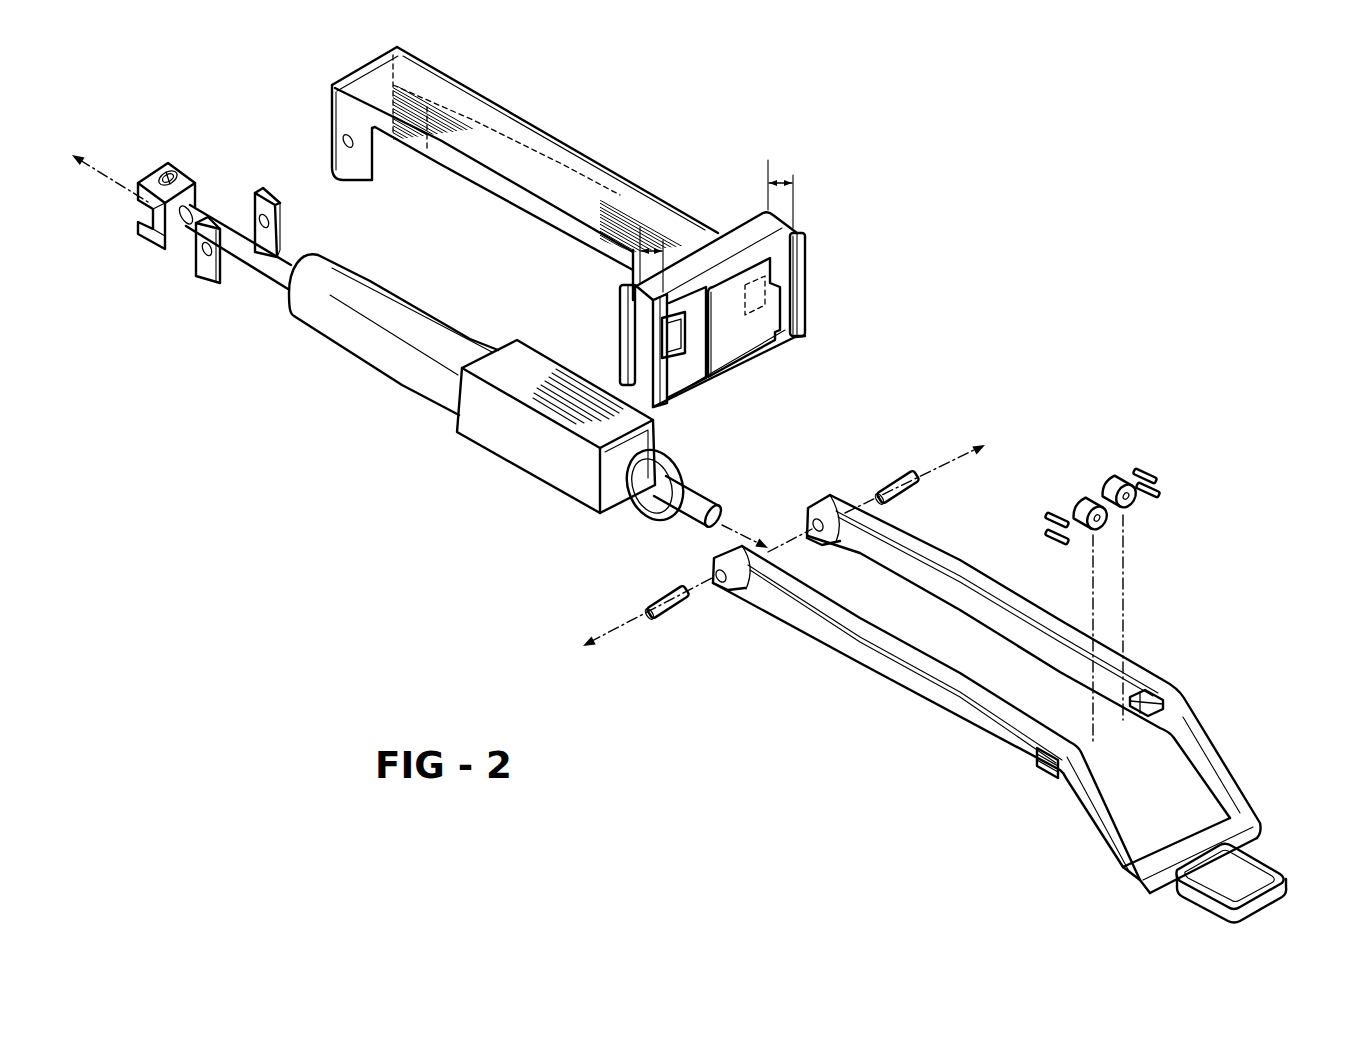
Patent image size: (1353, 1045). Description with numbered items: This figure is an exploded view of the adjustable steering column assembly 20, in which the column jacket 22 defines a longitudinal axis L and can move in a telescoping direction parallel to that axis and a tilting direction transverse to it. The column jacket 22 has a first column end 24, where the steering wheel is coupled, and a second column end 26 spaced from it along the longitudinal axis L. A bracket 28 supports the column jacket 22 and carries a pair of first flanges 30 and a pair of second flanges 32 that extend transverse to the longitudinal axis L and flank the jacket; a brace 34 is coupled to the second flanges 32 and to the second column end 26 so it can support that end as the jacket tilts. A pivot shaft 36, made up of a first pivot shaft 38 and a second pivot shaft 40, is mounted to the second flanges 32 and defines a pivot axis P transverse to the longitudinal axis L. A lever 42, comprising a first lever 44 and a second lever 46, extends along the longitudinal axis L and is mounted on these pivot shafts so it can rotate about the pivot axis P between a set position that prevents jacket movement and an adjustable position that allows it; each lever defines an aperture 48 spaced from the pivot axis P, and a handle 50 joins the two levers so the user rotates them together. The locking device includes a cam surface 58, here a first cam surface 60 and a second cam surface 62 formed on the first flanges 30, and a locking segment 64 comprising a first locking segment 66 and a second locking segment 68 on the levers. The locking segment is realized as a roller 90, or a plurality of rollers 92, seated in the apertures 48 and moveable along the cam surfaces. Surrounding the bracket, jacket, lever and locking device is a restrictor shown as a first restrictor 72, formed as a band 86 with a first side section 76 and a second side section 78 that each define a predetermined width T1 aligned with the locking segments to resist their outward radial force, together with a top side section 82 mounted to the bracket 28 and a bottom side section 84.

The adjustable steering column assembly 20 is at (1022, 200).
The column jacket 22 is at (531, 460).
The first column end 24 is at (698, 500).
The second column end 26 is at (272, 268).
The bracket 28 is at (610, 210).
The first flanges 30 is at (752, 350).
The second flanges 32 is at (340, 113).
The brace 34 is at (197, 265).
The pivot shaft 36 is at (706, 620).
The first pivot shaft 38 is at (660, 600).
The second pivot shaft 40 is at (890, 485).
The lever 42 is at (939, 760).
The first lever 44 is at (900, 680).
The second lever 46 is at (1215, 765).
The aperture 48 is at (1141, 697).
The handle 50 is at (1257, 886).
The cam surface 58 is at (690, 405).
The first cam surface 60 is at (672, 336).
The second cam surface 62 is at (791, 302).
The locking segment 64 is at (1062, 428).
The first locking segment 66 is at (1077, 552).
The second locking segment 68 is at (1145, 528).
The first restrictor 72 is at (746, 247).
The first side section 76 is at (632, 385).
The second side section 78 is at (793, 262).
The top side section 82 is at (712, 250).
The bottom side section 84 is at (725, 368).
The band 86 is at (801, 232).
The roller 90 is at (1040, 541).
The rollers 92 is at (1060, 508).
The longitudinal axis L is at (762, 542).
The pivot axis P is at (608, 636).
The predetermined width T1 is at (652, 247).